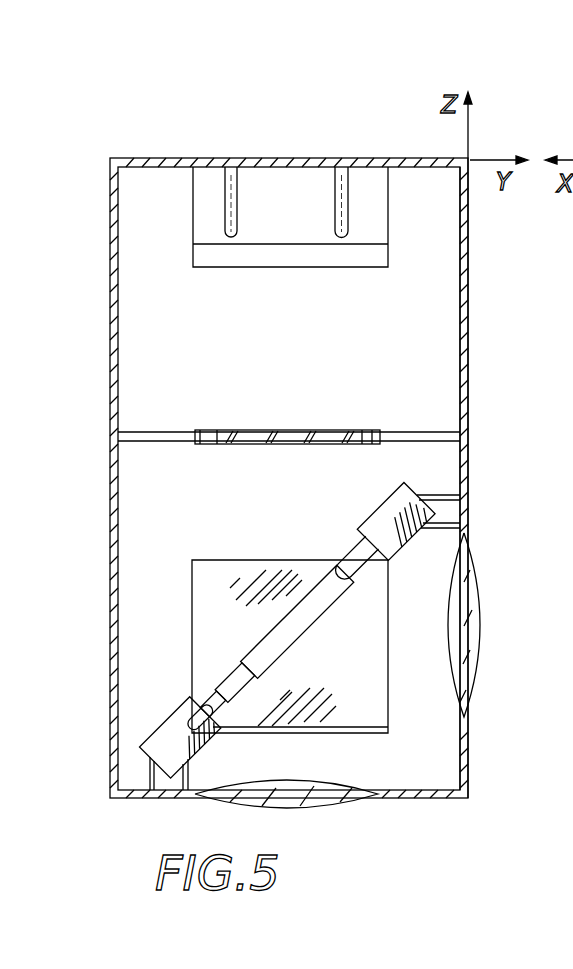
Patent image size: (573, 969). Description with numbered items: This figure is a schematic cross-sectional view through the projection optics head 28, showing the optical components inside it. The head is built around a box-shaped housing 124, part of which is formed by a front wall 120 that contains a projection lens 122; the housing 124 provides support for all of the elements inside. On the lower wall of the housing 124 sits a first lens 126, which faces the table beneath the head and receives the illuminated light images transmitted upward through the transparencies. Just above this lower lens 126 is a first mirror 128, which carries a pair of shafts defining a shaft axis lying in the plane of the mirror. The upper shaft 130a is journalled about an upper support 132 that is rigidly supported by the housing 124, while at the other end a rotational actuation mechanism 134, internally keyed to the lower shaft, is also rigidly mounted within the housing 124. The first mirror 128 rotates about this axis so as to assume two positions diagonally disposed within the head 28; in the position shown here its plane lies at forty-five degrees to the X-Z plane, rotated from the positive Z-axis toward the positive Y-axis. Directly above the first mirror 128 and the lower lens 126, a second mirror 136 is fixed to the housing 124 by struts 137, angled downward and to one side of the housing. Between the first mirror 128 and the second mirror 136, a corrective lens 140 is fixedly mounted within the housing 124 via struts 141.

The projection optics head 28 is at (306, 118).
The front wall 120 is at (468, 330).
The projection lens 122 is at (480, 592).
The box-shaped housing 124 is at (110, 256).
The first lens 126 is at (345, 806).
The first mirror 128 is at (303, 597).
The upper shaft 130a is at (217, 683).
The upper support 132 is at (377, 511).
The rotational actuation mechanism 134 is at (150, 730).
The second mirror 136 is at (325, 267).
The struts 137 is at (224, 202).
The corrective lens 140 is at (255, 430).
The struts 141 is at (147, 443).